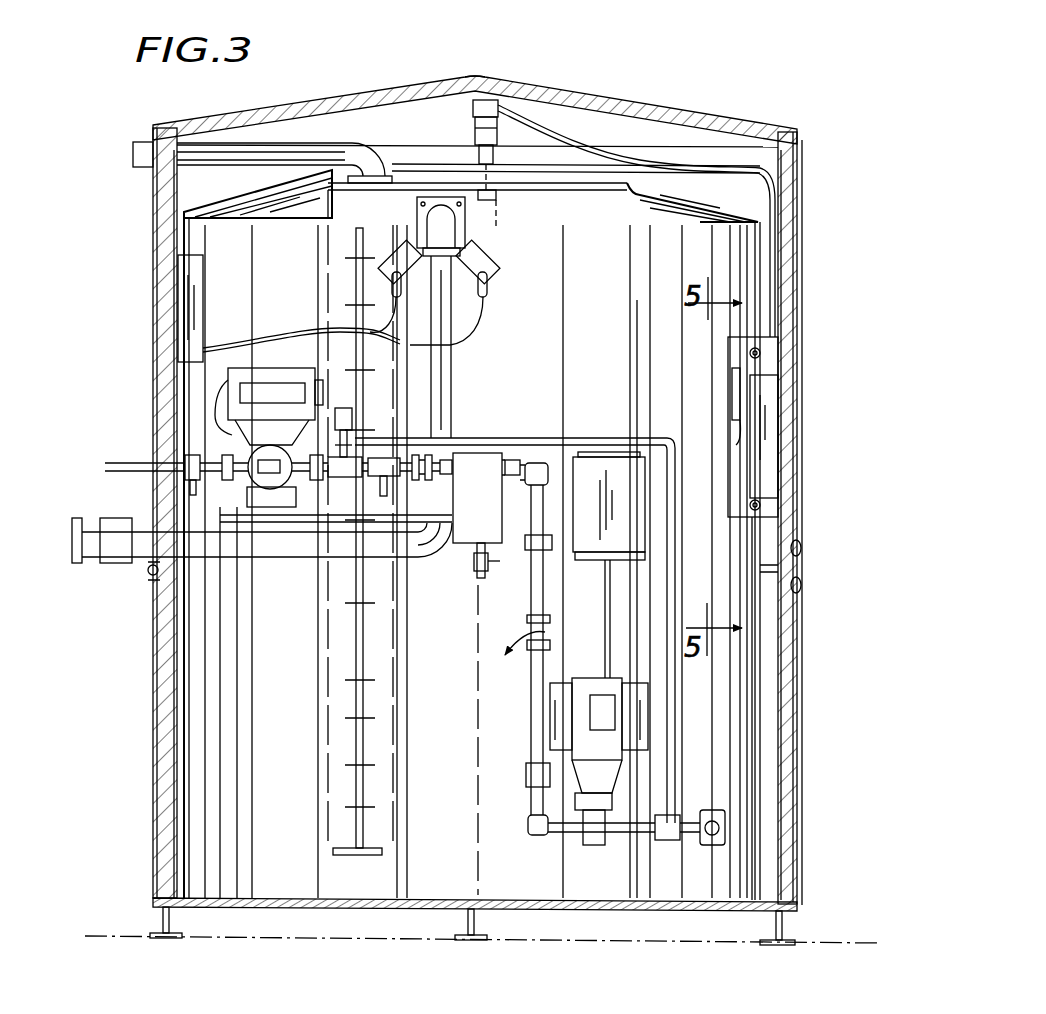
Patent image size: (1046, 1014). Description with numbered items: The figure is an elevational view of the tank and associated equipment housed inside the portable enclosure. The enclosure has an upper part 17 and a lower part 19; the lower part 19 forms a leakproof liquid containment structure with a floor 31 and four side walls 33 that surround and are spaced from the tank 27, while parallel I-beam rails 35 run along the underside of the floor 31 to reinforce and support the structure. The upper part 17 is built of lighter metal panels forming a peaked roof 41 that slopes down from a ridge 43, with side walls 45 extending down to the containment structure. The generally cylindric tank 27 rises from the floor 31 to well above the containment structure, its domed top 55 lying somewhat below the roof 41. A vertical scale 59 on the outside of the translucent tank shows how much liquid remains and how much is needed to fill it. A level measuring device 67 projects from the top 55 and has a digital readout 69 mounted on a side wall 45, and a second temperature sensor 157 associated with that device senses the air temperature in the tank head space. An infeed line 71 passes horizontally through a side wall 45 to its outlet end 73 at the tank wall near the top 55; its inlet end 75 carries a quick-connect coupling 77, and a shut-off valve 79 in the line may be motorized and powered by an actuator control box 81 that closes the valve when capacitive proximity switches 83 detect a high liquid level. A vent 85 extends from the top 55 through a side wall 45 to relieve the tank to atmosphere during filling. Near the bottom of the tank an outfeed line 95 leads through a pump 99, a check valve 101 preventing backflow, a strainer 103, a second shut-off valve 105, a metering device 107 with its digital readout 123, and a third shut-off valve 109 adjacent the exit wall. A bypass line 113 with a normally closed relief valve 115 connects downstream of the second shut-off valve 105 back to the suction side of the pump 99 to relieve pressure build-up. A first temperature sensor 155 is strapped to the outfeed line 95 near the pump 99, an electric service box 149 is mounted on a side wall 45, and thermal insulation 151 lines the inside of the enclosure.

The upper part 17 is at (802, 412).
The lower part 19 is at (150, 797).
The tank 27 is at (760, 722).
The floor 31 is at (250, 907).
The side walls 33 is at (153, 686).
The I-beam rails 35 is at (163, 920).
The peaked roof 41 is at (655, 111).
The ridge 43 is at (473, 100).
The side walls 45 is at (153, 283).
The domed top 55 is at (548, 138).
The vertical scale 59 is at (325, 765).
The measuring device 67 is at (470, 132).
The digital readout 69 is at (772, 472).
The infeed line 71 is at (285, 558).
The outlet end 73 is at (450, 210).
The inlet end 75 is at (95, 528).
The quick-connect coupling 77 is at (75, 548).
The shut-off valve 79 is at (118, 560).
The actuator control box 81 is at (178, 336).
The capacitive proximity switches 83 is at (392, 280).
The vent 85 is at (158, 140).
The outfeed line 95 is at (542, 616).
The pump 99 is at (572, 725).
The check valve 101 is at (527, 782).
The strainer 103 is at (458, 505).
The second shut-off valve 105 is at (385, 492).
The metering device 107 is at (262, 460).
The third shut-off valve 109 is at (195, 467).
The bypass line 113 is at (545, 440).
The relief valve 115 is at (355, 420).
The digital readout 123 is at (240, 385).
The electric service box 149 is at (755, 372).
The thermal insulation 151 is at (155, 206).
The first temperature sensor 155 is at (511, 670).
The second temperature sensor 157 is at (516, 226).